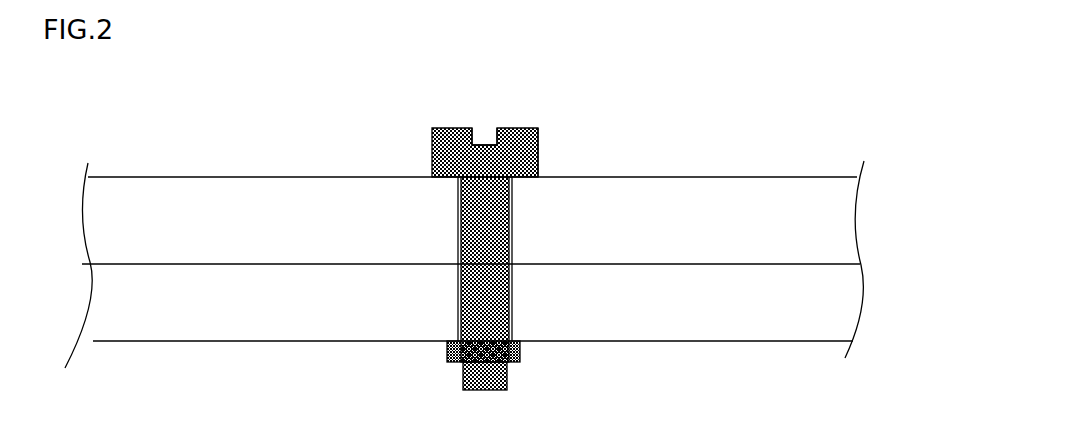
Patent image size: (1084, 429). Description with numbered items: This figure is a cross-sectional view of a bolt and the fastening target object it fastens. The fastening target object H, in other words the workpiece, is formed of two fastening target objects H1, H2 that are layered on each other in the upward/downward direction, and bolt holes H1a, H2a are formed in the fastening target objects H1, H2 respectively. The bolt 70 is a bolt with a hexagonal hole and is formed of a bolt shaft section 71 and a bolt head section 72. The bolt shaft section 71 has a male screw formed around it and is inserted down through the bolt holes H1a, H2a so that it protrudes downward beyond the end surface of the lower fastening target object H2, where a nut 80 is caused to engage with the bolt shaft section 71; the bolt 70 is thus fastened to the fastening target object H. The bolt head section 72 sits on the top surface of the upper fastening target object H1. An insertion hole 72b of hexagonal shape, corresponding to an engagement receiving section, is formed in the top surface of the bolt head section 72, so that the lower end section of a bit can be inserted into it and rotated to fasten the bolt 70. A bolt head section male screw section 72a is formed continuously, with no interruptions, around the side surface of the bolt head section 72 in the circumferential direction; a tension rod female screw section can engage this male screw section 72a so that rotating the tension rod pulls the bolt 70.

The bolt 70 is at (539, 228).
The bolt shaft section 71 is at (497, 303).
The bolt head section 72 is at (539, 155).
The bolt head section male screw section 72a is at (538, 153).
The insertion hole 72b is at (495, 141).
The nut 80 is at (522, 360).
The fastening target object H1 is at (827, 251).
The fastening target object H2 is at (828, 276).
The fastening target object H is at (926, 232).
The bolt hole H1a is at (458, 239).
The bolt hole H2a is at (458, 298).